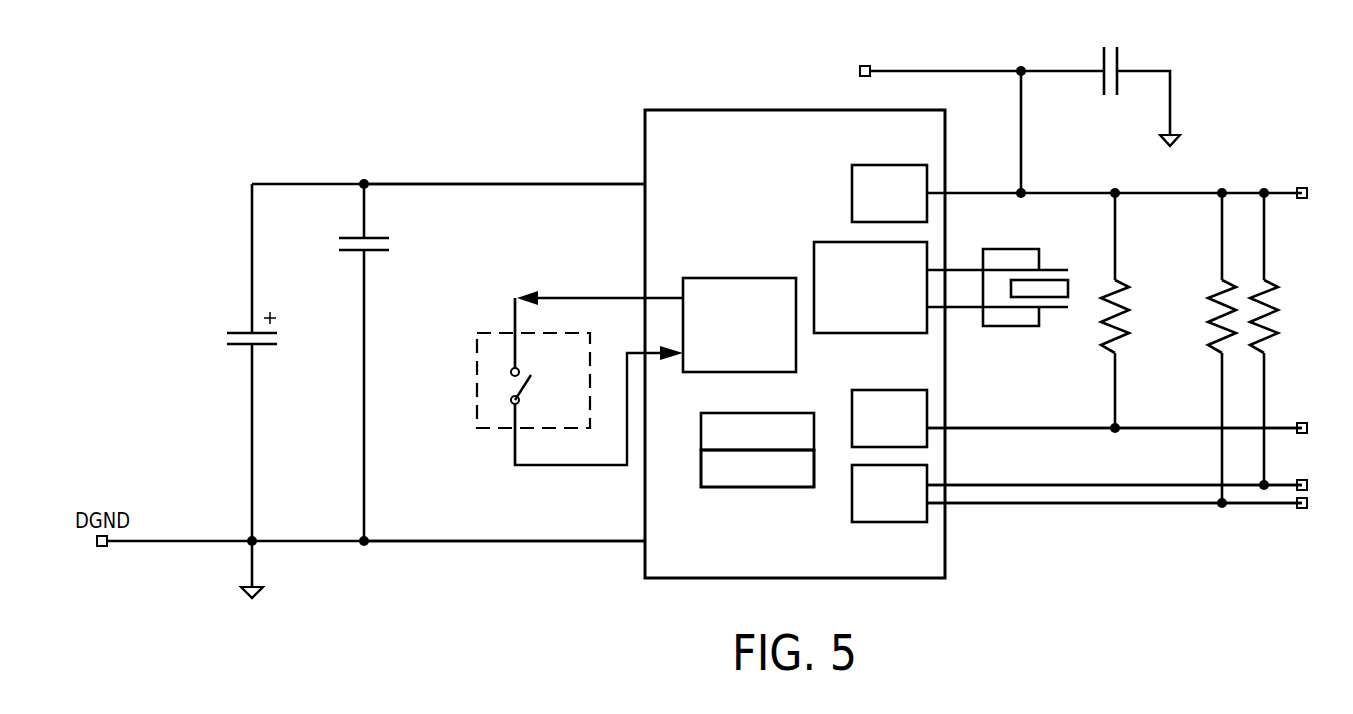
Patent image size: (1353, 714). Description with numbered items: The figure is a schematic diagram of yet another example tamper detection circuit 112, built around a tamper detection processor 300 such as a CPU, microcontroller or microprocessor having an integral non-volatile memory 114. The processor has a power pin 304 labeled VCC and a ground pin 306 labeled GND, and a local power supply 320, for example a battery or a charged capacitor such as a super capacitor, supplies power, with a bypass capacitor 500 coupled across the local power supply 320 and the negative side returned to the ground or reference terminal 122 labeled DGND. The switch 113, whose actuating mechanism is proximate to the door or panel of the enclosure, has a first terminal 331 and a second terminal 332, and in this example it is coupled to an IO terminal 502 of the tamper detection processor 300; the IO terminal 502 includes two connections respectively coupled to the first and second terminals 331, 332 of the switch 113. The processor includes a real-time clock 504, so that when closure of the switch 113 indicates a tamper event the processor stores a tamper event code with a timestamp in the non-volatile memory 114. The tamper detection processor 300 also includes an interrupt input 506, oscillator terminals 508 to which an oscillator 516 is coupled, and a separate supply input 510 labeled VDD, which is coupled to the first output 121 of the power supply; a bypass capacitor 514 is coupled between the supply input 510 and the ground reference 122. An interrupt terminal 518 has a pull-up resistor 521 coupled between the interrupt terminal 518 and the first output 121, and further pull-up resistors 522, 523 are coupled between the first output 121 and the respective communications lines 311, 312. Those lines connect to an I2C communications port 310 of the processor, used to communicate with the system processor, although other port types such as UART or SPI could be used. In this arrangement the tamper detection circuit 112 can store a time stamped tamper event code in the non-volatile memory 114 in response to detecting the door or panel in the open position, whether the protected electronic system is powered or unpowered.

The tamper detection circuit 112 is at (228, 68).
The switch 113 is at (477, 383).
The non-volatile memory 114 is at (748, 487).
The first output 121 is at (907, 71).
The ground reference terminal 122 is at (120, 545).
The tamper detection processor 300 is at (793, 110).
The power pin 304 is at (552, 184).
The ground pin 306 is at (552, 541).
The I2C communications port 310 is at (872, 522).
The communications terminal 311 is at (1150, 485).
The communications terminal 312 is at (1150, 503).
The local power supply 320 is at (233, 333).
The first terminal 331 is at (515, 316).
The second terminal 332 is at (515, 447).
The bypass capacitor 500 is at (347, 238).
The IO terminal 502 is at (718, 278).
The real-time clock 504 is at (740, 413).
The interrupt input 506 is at (870, 390).
The oscillator terminals 508 is at (862, 333).
The supply input 510 is at (890, 165).
The bypass capacitor 514 is at (1104, 52).
The oscillator 516 is at (1047, 267).
The interrupt terminal 518 is at (1150, 428).
The pull-up resistor 521 is at (1105, 350).
The pull-up resistor 522 is at (1212, 297).
The pull-up resistor 523 is at (1275, 340).